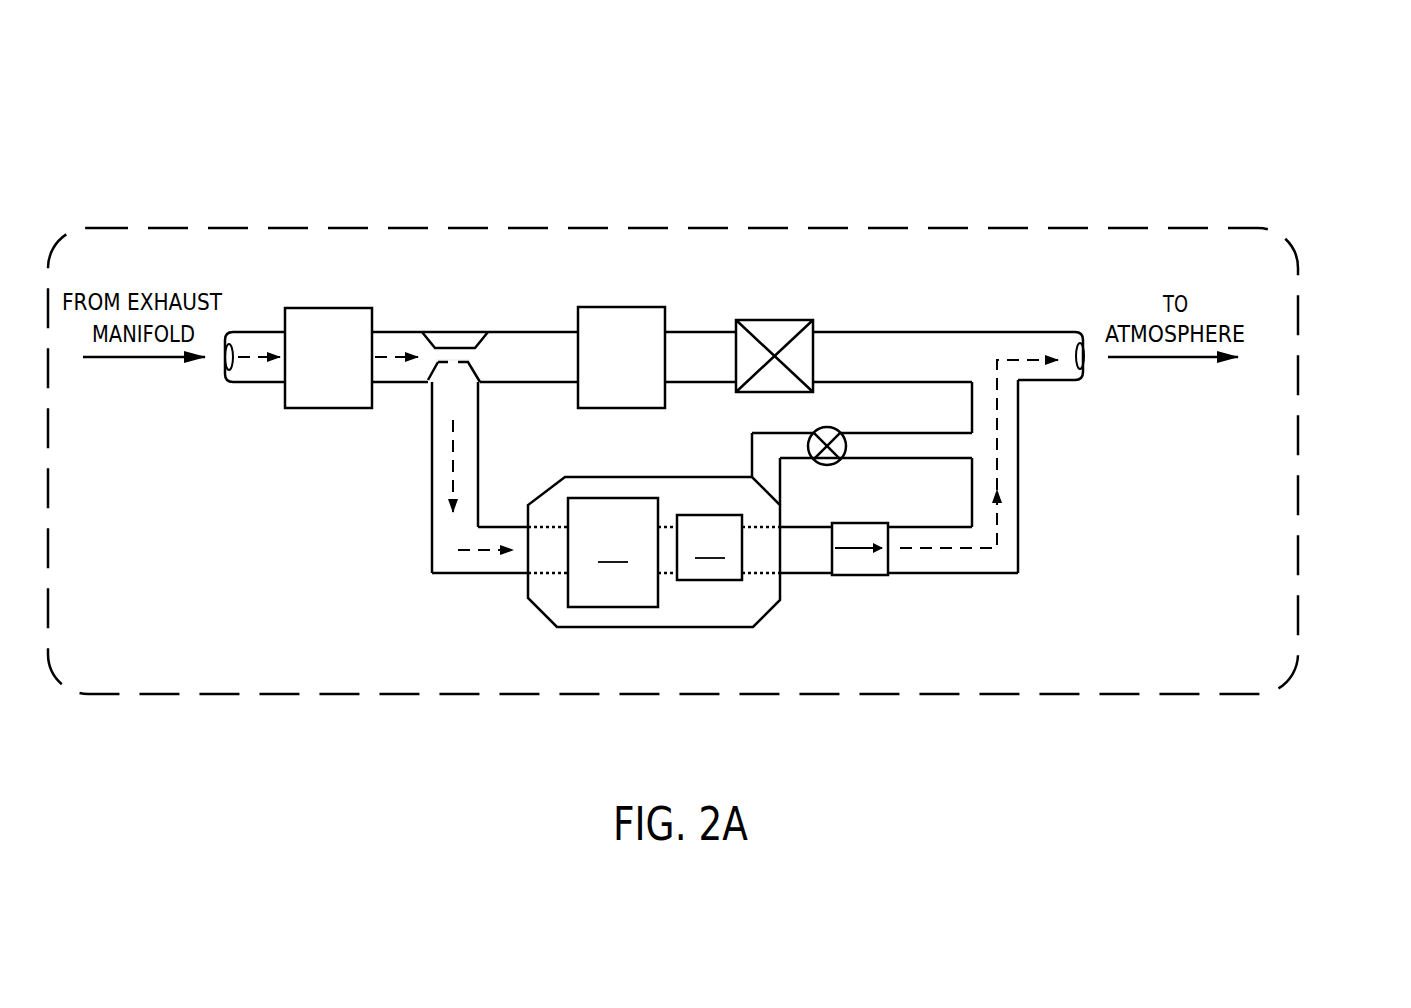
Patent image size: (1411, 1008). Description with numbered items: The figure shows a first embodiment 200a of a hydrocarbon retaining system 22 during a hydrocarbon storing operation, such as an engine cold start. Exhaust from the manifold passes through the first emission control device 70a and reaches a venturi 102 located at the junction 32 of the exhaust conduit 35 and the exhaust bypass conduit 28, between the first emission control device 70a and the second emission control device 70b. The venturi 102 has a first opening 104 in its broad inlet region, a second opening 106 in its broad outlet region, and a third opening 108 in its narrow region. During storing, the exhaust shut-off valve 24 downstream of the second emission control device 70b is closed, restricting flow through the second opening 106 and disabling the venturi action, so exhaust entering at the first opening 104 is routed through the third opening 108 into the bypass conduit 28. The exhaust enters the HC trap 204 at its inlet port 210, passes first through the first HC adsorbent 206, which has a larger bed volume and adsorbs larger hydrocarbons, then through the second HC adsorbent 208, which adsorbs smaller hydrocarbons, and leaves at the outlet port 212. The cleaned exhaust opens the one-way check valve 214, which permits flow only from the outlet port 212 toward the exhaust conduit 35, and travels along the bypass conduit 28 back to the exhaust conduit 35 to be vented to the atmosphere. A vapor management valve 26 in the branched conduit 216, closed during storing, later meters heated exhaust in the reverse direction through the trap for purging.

The first embodiment of hydrocarbon retaining system 200a is at (1318, 157).
The HC retaining system 22 is at (943, 228).
The first emission control device 70a is at (328, 358).
The second emission control device 70b is at (621, 357).
The venturi 102 is at (448, 332).
The first opening 104 is at (433, 357).
The second opening 106 is at (477, 357).
The third opening 108 is at (455, 365).
The junction 32 is at (483, 383).
The exhaust shut-off valve 24 is at (757, 320).
The exhaust conduit 35 is at (900, 332).
The exhaust bypass conduit 28 is at (432, 482).
The vapor management valve 26 is at (833, 428).
The branched conduit 216 is at (897, 433).
The HC trap 204 is at (625, 627).
The first HC adsorbent 206 is at (613, 552).
The second HC adsorbent 208 is at (709, 547).
The inlet port 210 is at (527, 565).
The outlet port 212 is at (782, 562).
The one-way check valve 214 is at (860, 523).